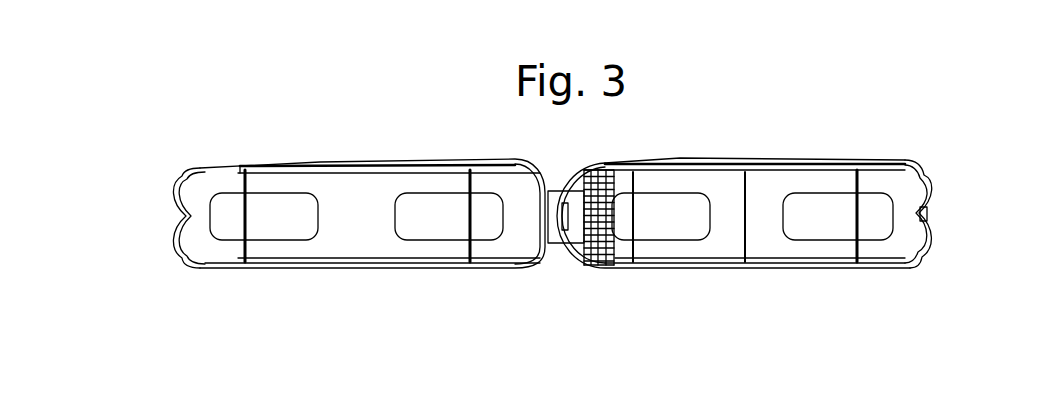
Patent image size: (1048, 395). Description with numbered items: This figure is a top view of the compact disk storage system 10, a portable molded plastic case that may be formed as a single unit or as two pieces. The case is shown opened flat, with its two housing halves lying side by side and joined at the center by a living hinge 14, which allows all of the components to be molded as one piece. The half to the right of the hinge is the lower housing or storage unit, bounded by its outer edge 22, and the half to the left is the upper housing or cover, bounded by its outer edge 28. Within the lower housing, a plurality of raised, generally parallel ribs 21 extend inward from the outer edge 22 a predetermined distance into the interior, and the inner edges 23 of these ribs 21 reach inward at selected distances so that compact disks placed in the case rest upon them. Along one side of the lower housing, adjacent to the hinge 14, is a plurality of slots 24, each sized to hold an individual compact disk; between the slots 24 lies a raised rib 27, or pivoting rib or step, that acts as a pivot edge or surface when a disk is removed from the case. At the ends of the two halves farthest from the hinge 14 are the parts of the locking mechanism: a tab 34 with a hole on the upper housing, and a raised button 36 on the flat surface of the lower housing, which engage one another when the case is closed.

The compact disk storage system 10 is at (976, 131).
The living hinge 14 is at (553, 190).
The raised ribs 21 is at (240, 212).
The outer edge of the lower housing 22 is at (776, 241).
The inner edges of the raised ribs 23 is at (248, 182).
The slots 24 is at (621, 185).
The raised rib 27 is at (608, 258).
The outer edge of the upper housing 28 is at (372, 228).
The tab 34 is at (186, 216).
The raised button 36 is at (930, 213).